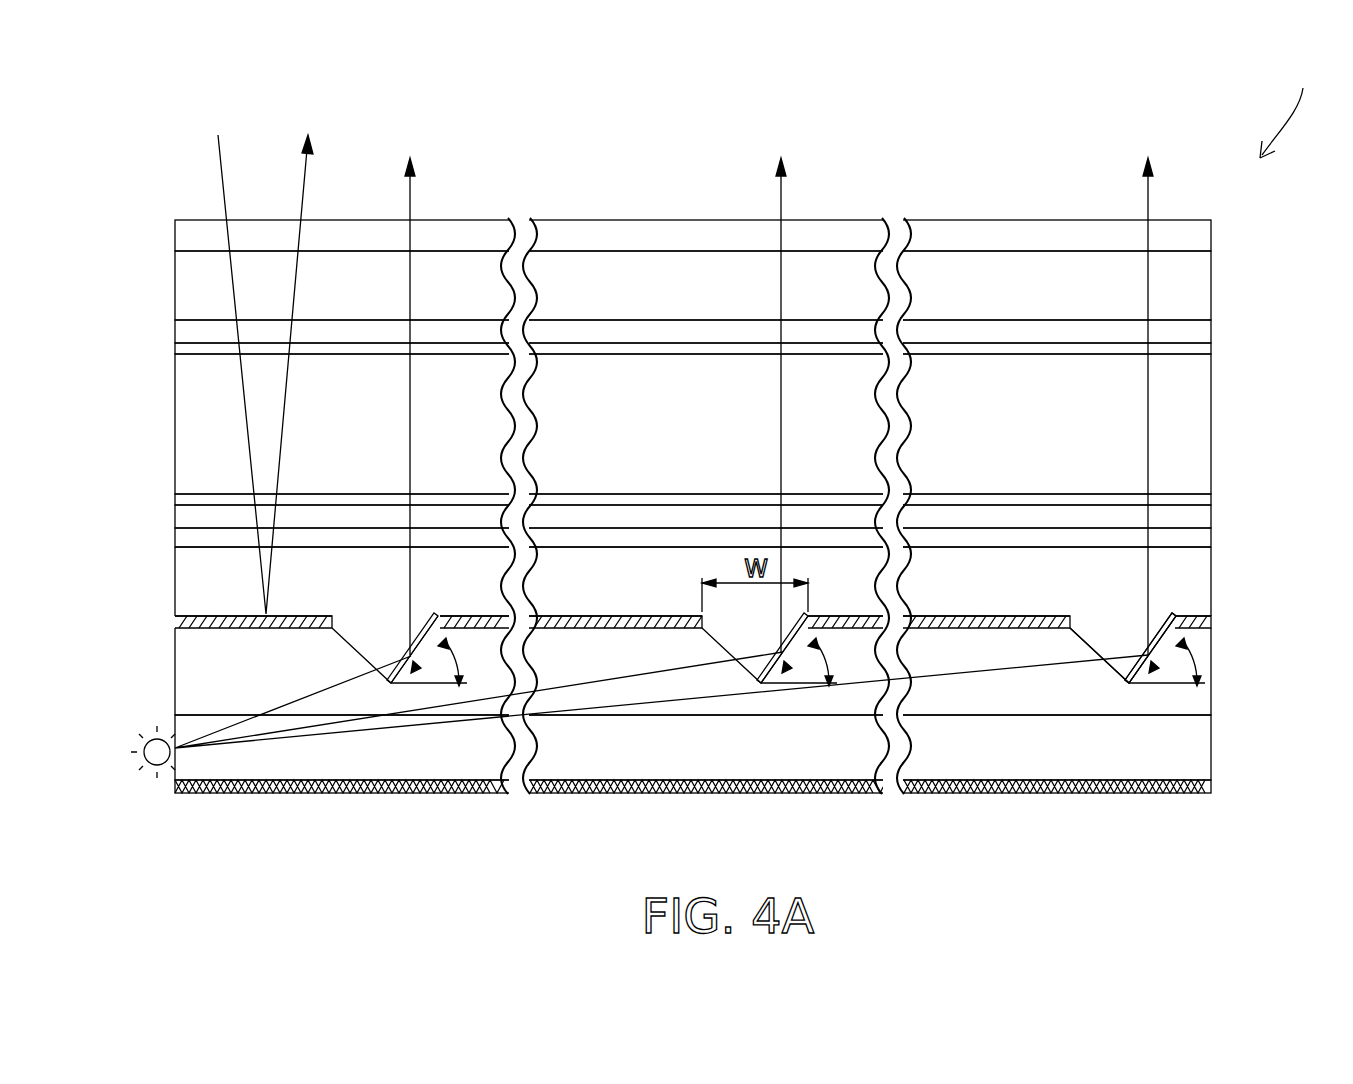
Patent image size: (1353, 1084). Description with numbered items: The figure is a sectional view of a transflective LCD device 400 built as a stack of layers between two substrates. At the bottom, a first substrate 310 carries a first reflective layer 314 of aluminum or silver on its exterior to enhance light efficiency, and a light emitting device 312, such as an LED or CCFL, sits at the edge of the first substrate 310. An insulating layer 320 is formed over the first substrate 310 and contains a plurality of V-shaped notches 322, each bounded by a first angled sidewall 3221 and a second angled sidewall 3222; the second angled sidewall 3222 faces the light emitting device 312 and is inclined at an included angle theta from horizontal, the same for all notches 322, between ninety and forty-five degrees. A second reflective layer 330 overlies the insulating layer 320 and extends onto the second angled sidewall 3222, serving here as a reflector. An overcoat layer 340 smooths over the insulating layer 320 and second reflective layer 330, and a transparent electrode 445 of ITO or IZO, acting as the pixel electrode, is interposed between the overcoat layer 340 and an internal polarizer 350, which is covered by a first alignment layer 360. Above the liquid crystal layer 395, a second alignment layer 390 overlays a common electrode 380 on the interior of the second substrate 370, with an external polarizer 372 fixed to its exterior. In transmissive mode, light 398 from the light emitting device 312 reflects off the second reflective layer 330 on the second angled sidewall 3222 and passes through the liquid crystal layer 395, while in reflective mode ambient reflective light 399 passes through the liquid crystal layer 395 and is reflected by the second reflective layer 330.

The transflective LCD device 400 is at (1282, 82).
The external polarizer 372 is at (1200, 234).
The second substrate 370 is at (1200, 272).
The common electrode 380 is at (1200, 330).
The second alignment layer 390 is at (1200, 345).
The liquid crystal layer 395 is at (1200, 413).
The first alignment layer 360 is at (185, 497).
The internal polarizer 350 is at (185, 518).
The transparent electrode 445 is at (185, 536).
The overcoat layer 340 is at (185, 590).
The second reflective layer 330 is at (1213, 621).
The insulating layer 320 is at (1213, 703).
The notch 322 is at (414, 686).
The first angled sidewall 3221 is at (1085, 643).
The second angled sidewall 3222 is at (1168, 618).
The first substrate 310 is at (1213, 745).
The first reflective layer 314 is at (1213, 786).
The light emitting device 312 is at (161, 772).
The light 398 is at (300, 742).
The reflective light 399 is at (218, 158).